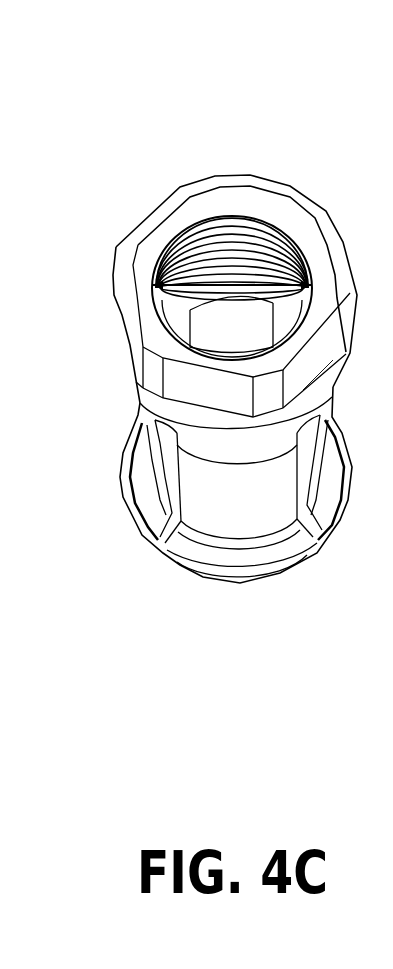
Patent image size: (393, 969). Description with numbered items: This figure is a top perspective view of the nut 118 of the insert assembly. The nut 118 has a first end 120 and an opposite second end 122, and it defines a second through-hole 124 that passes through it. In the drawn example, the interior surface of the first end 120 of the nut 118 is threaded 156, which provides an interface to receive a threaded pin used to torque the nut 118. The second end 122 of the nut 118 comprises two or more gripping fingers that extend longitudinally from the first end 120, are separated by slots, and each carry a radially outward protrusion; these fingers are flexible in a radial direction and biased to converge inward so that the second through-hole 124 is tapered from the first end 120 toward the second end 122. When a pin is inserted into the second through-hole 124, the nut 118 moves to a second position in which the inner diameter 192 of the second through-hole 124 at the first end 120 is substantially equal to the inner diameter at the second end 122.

The nut 118 is at (63, 90).
The first end 120 is at (250, 145).
The second end 122 is at (245, 600).
The second through-hole 124 is at (225, 332).
The threaded 156 is at (197, 225).
The inner diameter 192 is at (253, 280).